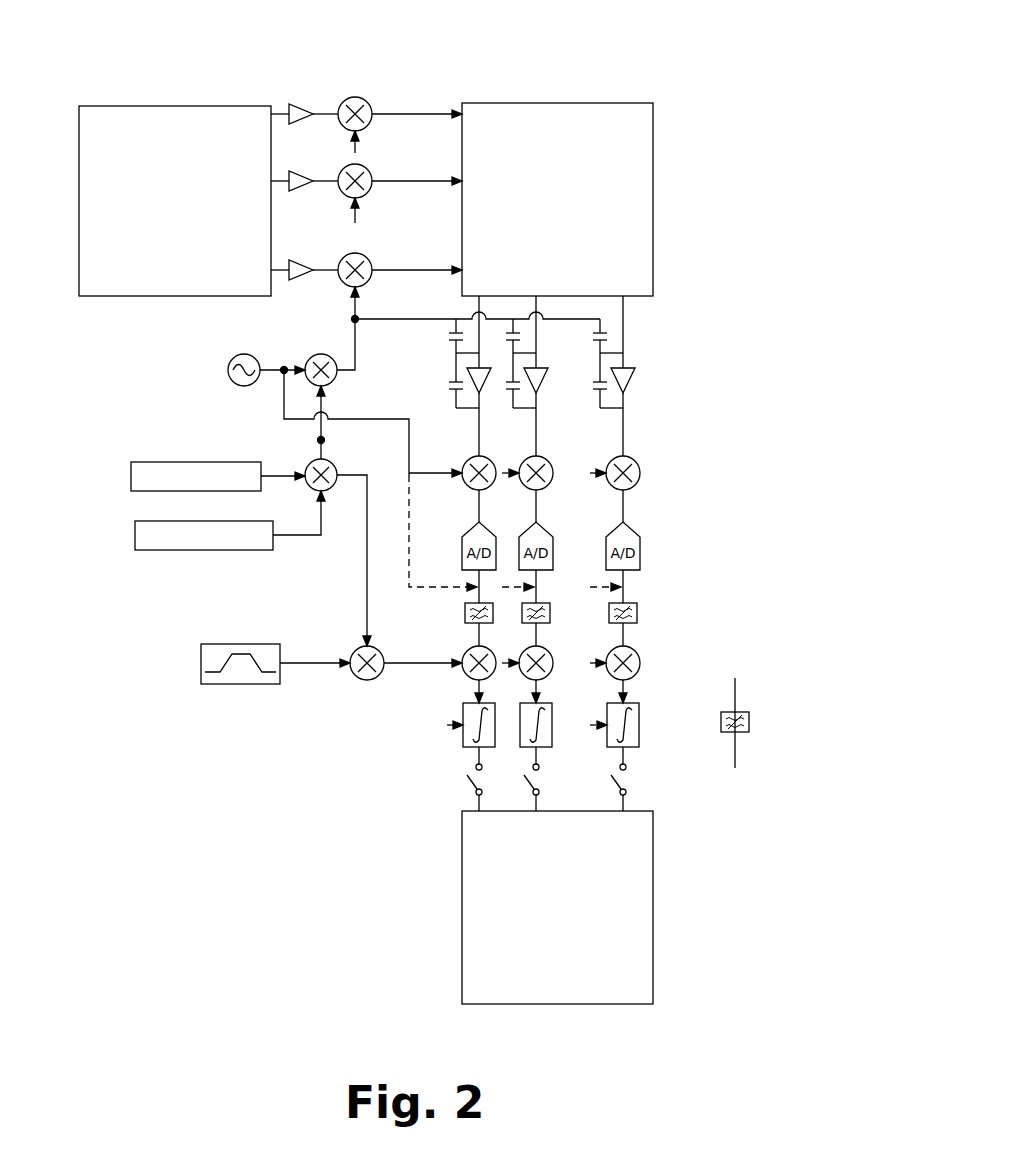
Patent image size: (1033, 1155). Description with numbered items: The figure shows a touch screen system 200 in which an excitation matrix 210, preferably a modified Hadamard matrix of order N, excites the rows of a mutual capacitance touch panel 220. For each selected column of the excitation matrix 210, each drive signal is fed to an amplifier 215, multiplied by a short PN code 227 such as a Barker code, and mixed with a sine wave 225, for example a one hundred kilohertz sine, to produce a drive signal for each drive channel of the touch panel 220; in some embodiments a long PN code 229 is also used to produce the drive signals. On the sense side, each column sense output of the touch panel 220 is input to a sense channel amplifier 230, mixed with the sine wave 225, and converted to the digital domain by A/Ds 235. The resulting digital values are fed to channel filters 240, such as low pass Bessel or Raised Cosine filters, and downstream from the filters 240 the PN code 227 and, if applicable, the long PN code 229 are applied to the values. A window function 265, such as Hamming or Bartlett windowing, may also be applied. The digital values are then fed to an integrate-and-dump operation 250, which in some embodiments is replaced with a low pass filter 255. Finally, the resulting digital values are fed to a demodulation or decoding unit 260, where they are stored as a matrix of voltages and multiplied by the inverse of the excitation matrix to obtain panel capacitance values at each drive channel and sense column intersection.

The touch screen system 200 is at (220, 799).
The excitation matrix 210 is at (80, 57).
The amplifier 215 is at (310, 104).
The touch panel 220 is at (726, 68).
The sine wave 225 is at (228, 370).
The short PN code 227 is at (131, 466).
The long PN code 229 is at (135, 526).
The sense channel amplifier 230 is at (627, 377).
The A/D 235 is at (641, 540).
The channel filters 240 is at (641, 607).
The integrate-and-dump operation 250 is at (640, 704).
The low pass filter 255 is at (748, 713).
The demodulation or decoding unit 260 is at (653, 930).
The window function 265 is at (201, 649).